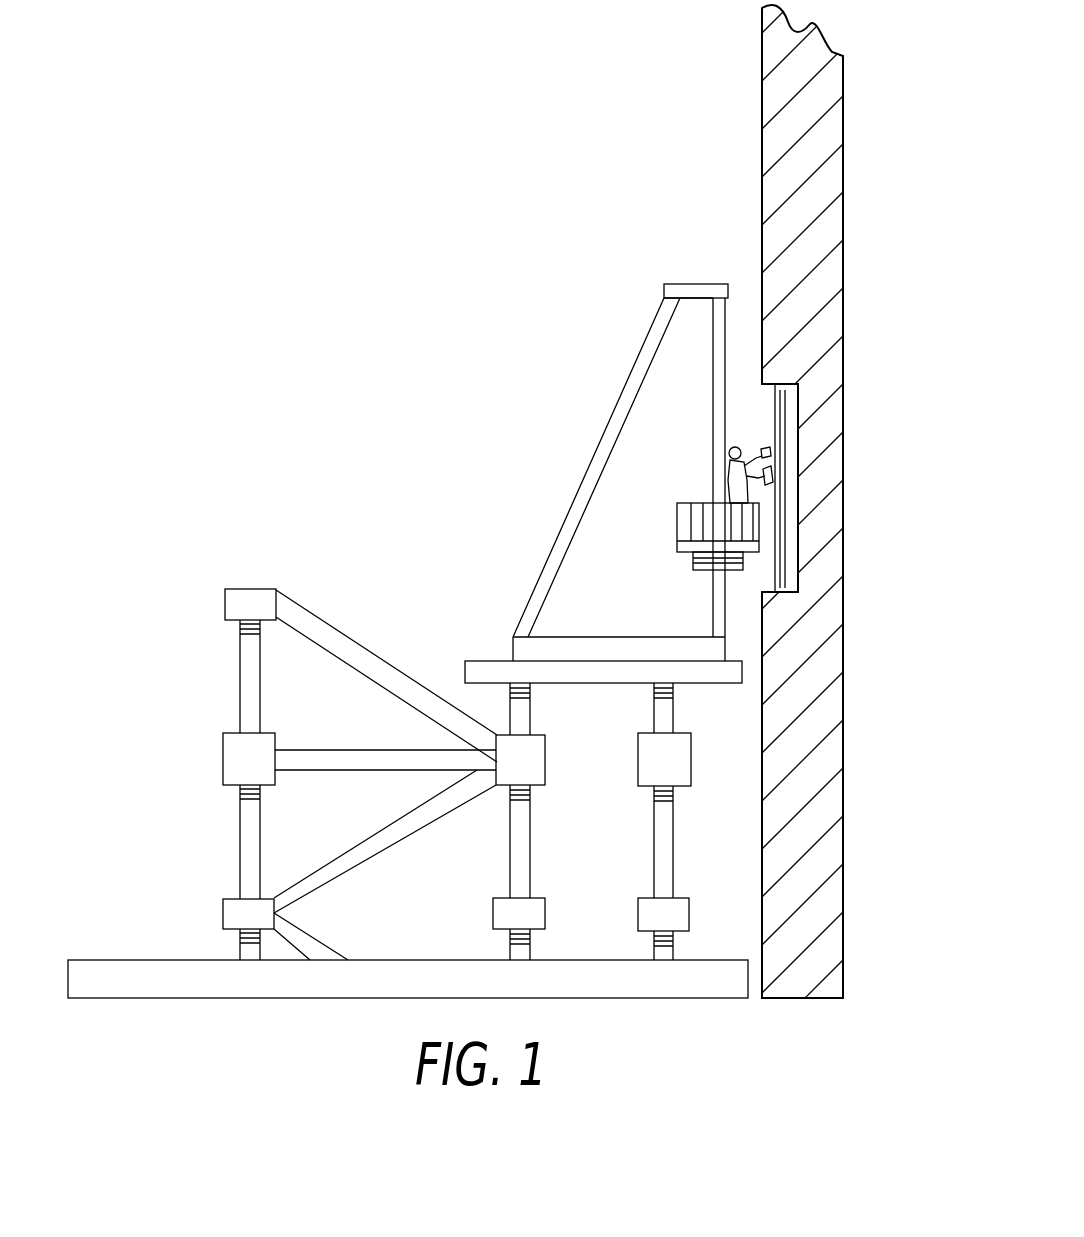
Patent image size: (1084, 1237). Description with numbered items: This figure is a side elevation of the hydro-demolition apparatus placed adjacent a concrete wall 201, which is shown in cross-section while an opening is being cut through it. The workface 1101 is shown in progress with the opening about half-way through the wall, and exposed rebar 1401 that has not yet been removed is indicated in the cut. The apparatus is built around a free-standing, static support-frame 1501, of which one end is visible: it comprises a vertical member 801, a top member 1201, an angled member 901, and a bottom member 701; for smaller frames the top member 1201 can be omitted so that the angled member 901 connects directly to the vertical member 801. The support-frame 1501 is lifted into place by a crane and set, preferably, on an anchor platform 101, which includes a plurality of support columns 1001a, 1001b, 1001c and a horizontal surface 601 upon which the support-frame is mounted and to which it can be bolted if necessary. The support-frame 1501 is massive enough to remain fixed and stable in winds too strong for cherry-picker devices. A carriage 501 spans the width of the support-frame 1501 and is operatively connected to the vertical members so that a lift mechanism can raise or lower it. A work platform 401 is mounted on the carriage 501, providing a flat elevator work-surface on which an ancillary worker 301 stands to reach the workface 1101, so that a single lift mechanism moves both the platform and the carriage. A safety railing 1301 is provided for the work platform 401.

The anchor platform 101 is at (210, 798).
The concrete wall 201 is at (762, 153).
The ancillary worker 301 is at (772, 460).
The work platform 401 is at (760, 543).
The carriage 501 is at (748, 565).
The horizontal surface 601 is at (483, 661).
The bottom member 701 is at (687, 648).
The vertical member 801 is at (720, 335).
The angled member 901 is at (621, 415).
The support column 1001a is at (250, 670).
The support column 1001b is at (522, 853).
The support column 1001c is at (665, 818).
The workface 1101 is at (798, 418).
The top member 1201 is at (688, 290).
The safety railing 1301 is at (762, 520).
The exposed rebar 1401 is at (798, 388).
The support-frame 1501 is at (555, 492).